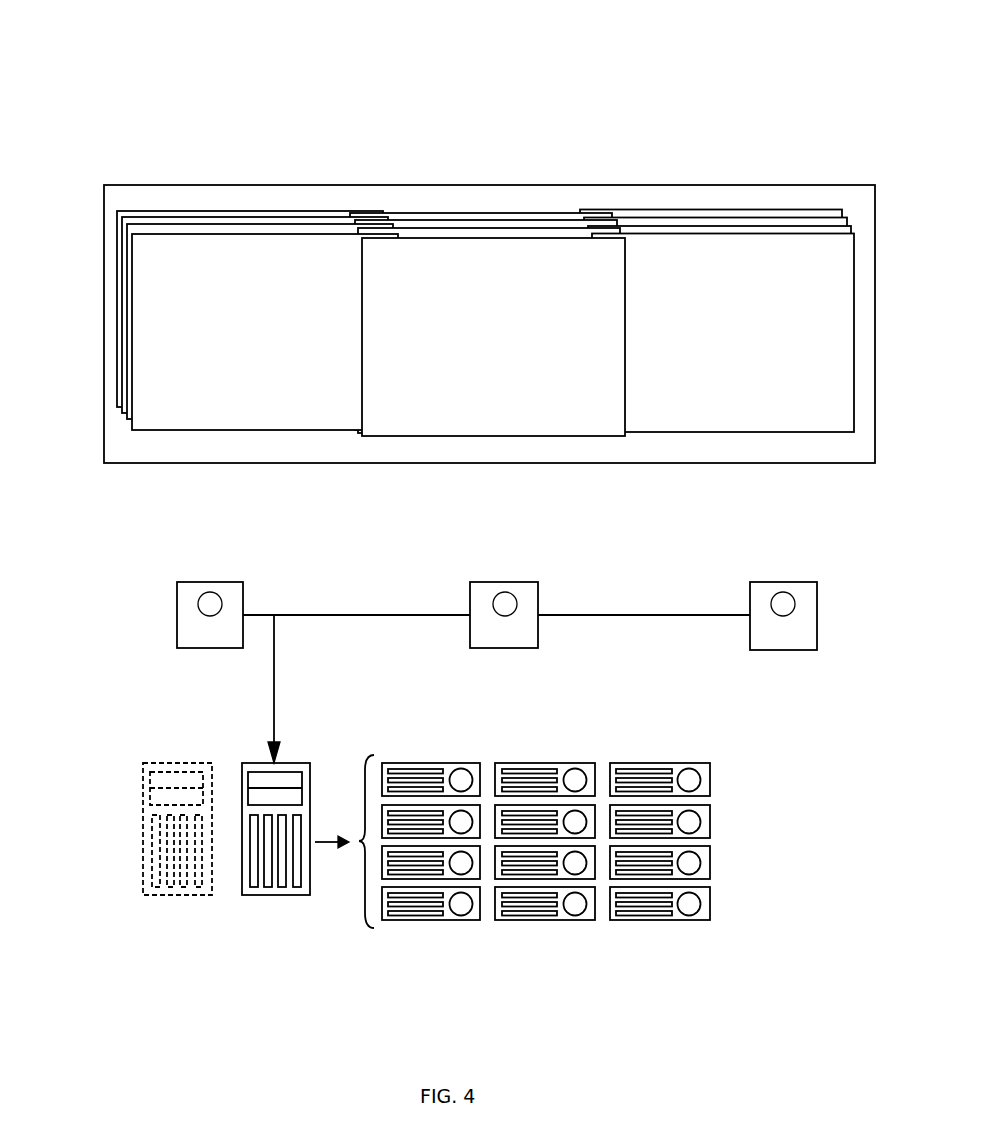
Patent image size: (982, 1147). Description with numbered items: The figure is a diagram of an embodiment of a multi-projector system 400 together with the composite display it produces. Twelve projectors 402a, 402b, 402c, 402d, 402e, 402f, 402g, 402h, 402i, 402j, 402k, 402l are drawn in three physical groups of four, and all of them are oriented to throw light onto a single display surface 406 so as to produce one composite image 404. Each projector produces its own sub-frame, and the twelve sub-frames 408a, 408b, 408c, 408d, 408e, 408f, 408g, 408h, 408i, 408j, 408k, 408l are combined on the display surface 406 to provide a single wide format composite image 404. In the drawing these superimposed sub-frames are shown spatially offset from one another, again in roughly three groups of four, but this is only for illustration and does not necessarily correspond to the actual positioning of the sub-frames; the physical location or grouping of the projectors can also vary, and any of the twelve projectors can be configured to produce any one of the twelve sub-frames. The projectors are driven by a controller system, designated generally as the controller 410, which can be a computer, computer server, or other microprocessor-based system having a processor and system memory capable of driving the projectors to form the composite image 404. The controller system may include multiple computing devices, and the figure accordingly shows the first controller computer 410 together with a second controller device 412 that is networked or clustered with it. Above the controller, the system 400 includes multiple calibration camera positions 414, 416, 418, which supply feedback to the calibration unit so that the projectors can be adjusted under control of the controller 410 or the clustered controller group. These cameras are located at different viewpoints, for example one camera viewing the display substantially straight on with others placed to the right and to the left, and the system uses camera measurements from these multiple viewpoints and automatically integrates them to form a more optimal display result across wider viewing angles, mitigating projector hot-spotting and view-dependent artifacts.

The multi-projector system 400 is at (375, 62).
The composite image 404 is at (591, 198).
The display surface 406 is at (575, 453).
The sub-frame 408a is at (145, 212).
The sub-frame 408b is at (188, 218).
The sub-frame 408c is at (238, 229).
The sub-frame 408d is at (250, 418).
The sub-frame 408e is at (398, 218).
The sub-frame 408f is at (438, 226).
The sub-frame 408g is at (472, 232).
The sub-frame 408h is at (470, 410).
The sub-frame 408i is at (660, 212).
The sub-frame 408j is at (705, 224).
The sub-frame 408k is at (752, 232).
The sub-frame 408l is at (737, 403).
The controller 410 is at (263, 893).
The second controller device 412 is at (173, 763).
The calibration camera position 414 is at (233, 607).
The calibration camera position 416 is at (535, 617).
The calibration camera position 418 is at (800, 635).
The projector 402a is at (398, 772).
The projector 402b is at (418, 830).
The projector 402c is at (415, 867).
The projector 402d is at (462, 912).
The projector 402e is at (512, 772).
The projector 402f is at (560, 815).
The projector 402g is at (517, 873).
The projector 402h is at (573, 913).
The projector 402i is at (710, 777).
The projector 402j is at (703, 822).
The projector 402k is at (712, 862).
The projector 402l is at (700, 917).